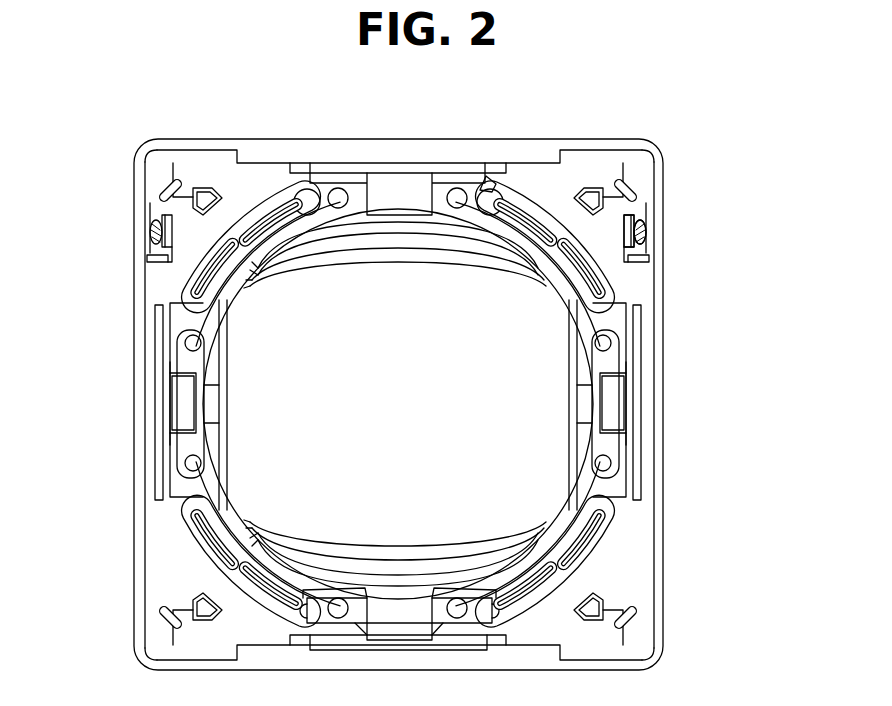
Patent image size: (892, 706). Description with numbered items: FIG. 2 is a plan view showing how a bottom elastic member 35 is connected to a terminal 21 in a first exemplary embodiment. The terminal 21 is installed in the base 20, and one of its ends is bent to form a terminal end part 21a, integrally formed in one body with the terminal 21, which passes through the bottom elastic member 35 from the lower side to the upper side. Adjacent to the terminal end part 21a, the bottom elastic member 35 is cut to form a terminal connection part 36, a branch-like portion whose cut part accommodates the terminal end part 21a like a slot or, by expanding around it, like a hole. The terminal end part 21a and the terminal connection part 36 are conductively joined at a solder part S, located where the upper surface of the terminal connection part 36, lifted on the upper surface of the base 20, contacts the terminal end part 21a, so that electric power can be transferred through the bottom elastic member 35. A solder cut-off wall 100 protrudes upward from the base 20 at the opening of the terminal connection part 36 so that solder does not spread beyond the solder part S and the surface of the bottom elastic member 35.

The base 20 is at (637, 186).
The terminal 21 is at (478, 190).
The terminal end part 21a is at (642, 228).
The bottom elastic member 35 is at (636, 294).
The terminal connection part 36 is at (645, 244).
The solder cut-off wall 100 is at (147, 258).
The solder part S is at (640, 213).